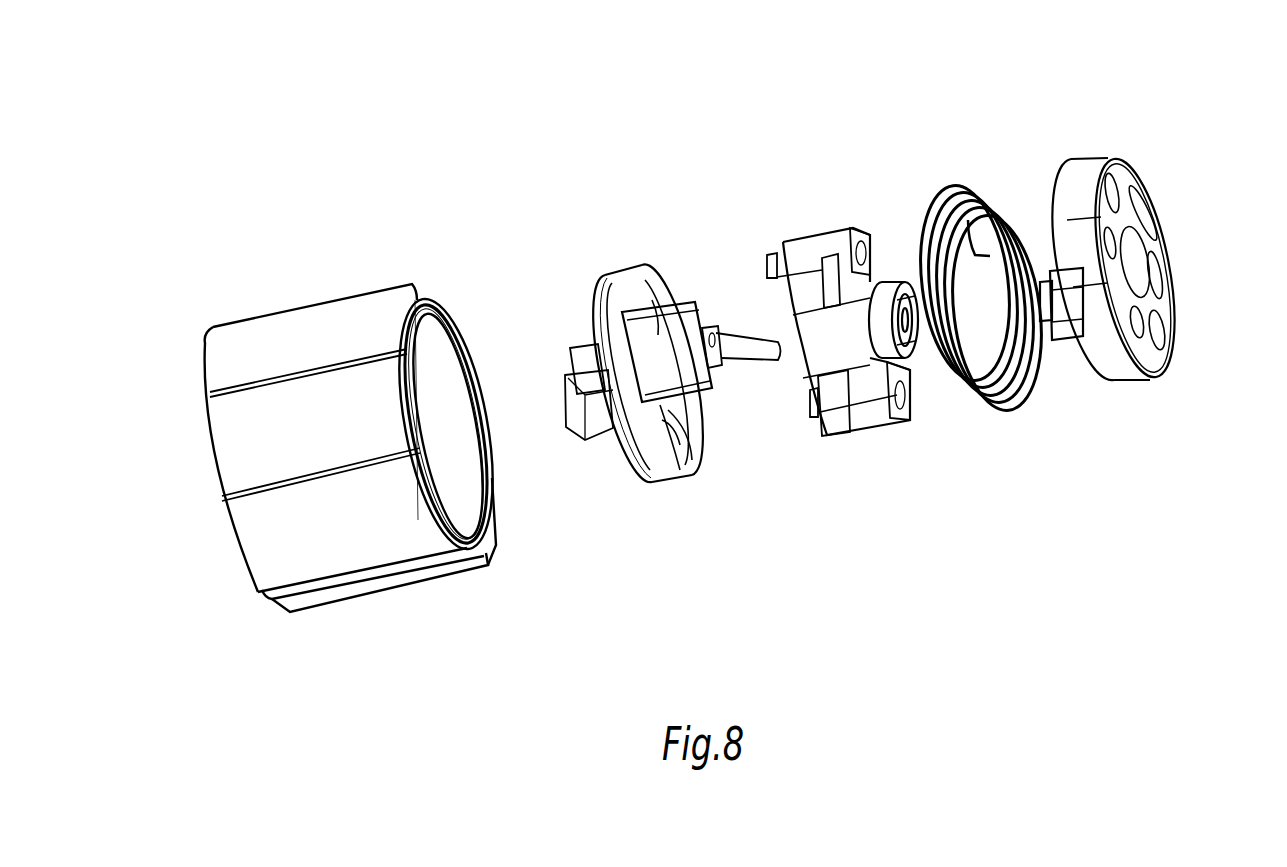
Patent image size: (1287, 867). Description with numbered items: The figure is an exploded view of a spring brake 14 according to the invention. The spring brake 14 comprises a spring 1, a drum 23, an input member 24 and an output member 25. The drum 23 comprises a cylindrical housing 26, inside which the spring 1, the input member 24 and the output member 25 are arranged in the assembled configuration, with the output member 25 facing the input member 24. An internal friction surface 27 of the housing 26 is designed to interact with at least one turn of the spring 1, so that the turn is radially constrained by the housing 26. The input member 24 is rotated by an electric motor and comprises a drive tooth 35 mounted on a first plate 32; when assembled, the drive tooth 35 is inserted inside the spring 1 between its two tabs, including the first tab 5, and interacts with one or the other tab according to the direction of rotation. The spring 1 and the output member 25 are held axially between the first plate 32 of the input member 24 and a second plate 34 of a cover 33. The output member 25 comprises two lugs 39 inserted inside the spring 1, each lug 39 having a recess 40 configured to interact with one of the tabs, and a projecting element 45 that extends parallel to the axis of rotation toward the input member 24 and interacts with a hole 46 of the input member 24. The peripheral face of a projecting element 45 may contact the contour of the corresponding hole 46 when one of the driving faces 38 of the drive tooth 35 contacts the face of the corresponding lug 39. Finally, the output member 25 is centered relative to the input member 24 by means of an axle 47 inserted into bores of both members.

The spring 1 is at (953, 207).
The first tab 5 is at (985, 243).
The spring brake 14 is at (357, 165).
The drum 23 is at (247, 442).
The input member 24 is at (658, 477).
The output member 25 is at (888, 421).
The housing 26 is at (425, 357).
The internal friction surface 27 is at (437, 433).
The first plate 32 is at (622, 273).
The cover 33 is at (1123, 370).
The second plate 34 is at (1128, 180).
The drive tooth 35 is at (677, 327).
The driving faces 38 is at (710, 320).
The lugs 39 is at (860, 235).
The recess 40 is at (840, 270).
The projecting element 45 is at (770, 263).
The hole 46 is at (633, 280).
The axle 47 is at (753, 348).